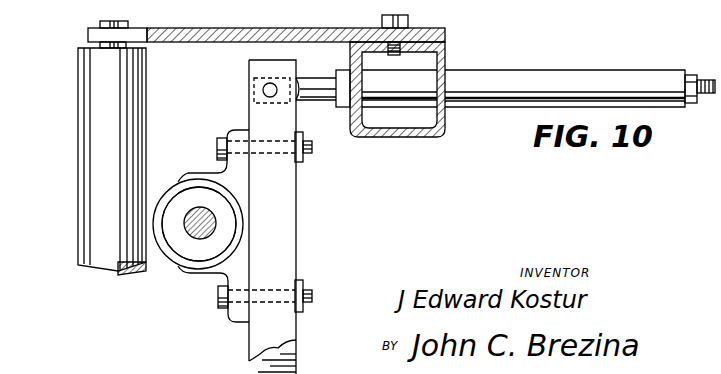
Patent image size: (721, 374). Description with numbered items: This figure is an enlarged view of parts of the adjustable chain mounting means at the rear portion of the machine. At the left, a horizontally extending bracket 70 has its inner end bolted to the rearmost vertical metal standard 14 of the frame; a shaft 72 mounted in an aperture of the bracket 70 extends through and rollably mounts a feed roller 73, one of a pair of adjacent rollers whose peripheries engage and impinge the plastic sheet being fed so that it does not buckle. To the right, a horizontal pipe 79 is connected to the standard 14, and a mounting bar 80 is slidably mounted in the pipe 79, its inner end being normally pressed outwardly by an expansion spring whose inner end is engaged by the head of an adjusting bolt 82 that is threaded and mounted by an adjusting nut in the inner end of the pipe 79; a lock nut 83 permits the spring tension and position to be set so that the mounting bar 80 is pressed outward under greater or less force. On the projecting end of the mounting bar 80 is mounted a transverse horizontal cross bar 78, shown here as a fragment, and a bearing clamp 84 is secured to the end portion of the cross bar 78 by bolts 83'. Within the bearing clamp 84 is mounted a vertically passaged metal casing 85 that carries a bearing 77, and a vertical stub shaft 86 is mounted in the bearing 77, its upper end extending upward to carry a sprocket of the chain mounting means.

The vertical metal standard 14 is at (448, 55).
The bracket 70 is at (270, 27).
The shaft 72 is at (100, 22).
The feed roller 73 is at (103, 110).
The bearing 77 is at (200, 196).
The horizontal cross bar 78 is at (285, 211).
The horizontal pipe 79 is at (560, 82).
The mounting bar 80 is at (324, 90).
The adjusting bolt 82 is at (700, 76).
The lock nut 83 is at (689, 109).
The bolt 83' is at (247, 207).
The bearing clamp 84 is at (235, 263).
The metal casing 85 is at (178, 262).
The stub shaft 86 is at (190, 212).